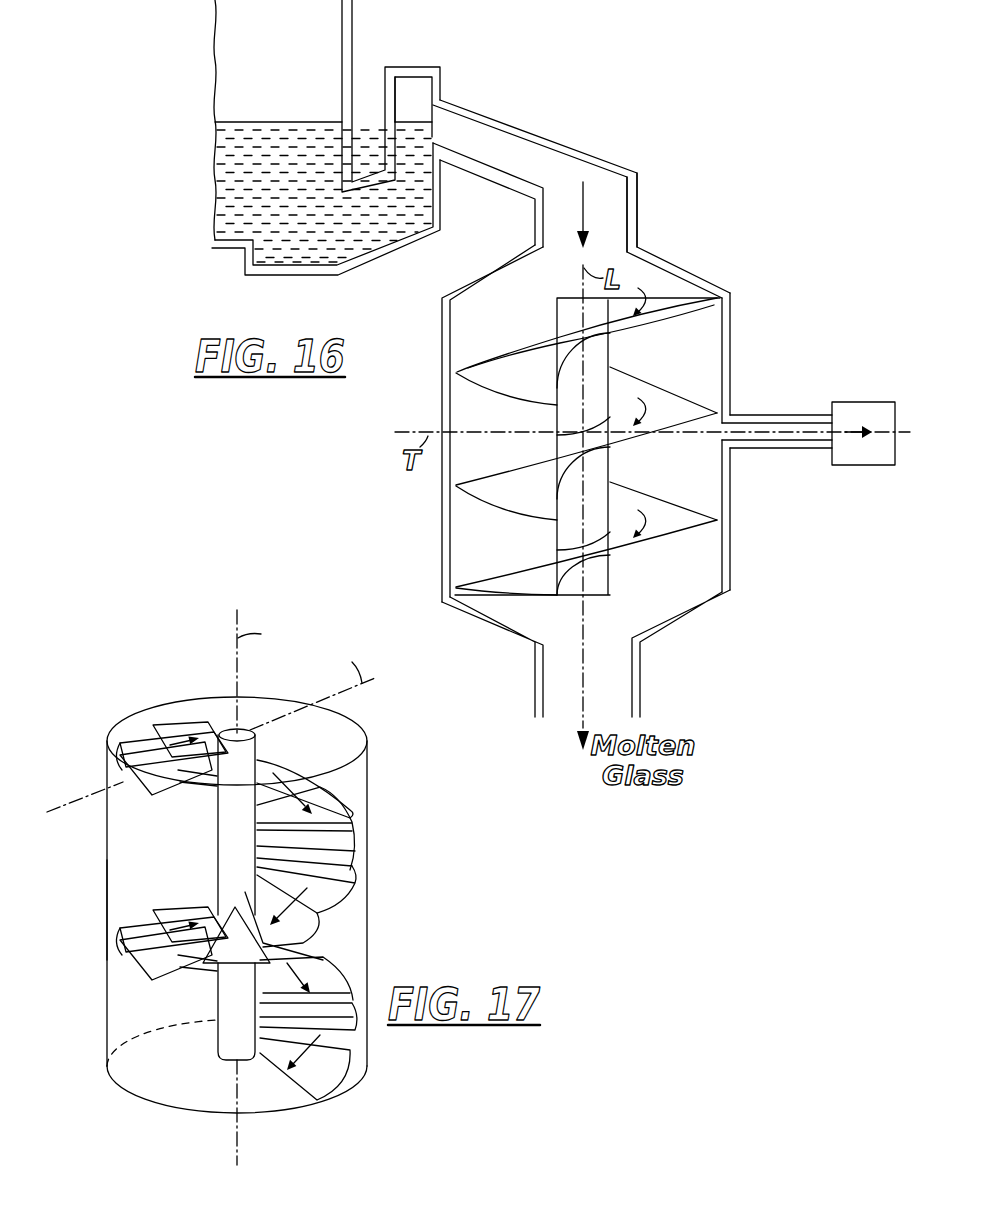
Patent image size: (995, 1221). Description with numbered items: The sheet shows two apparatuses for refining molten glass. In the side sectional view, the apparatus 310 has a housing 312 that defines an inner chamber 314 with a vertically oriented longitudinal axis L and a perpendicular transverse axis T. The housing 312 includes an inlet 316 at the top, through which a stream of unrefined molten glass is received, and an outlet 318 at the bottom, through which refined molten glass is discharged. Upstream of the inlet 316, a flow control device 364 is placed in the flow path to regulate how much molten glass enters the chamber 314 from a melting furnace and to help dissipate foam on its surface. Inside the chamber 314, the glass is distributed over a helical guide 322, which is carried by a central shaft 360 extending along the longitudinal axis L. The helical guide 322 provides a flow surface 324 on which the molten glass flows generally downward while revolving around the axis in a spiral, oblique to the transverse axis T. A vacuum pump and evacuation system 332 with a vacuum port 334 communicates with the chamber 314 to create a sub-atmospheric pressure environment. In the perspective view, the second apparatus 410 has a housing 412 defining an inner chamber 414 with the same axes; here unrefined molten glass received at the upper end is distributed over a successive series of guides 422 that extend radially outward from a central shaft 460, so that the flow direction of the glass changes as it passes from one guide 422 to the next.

In FIG. 16, the apparatus 310 is at (740, 273).
In FIG. 16, the housing 312 is at (731, 318).
In FIG. 16, the inner chamber 314 is at (503, 303).
In FIG. 16, the inlet 316 is at (616, 203).
In FIG. 16, the outlet 318 is at (642, 687).
In FIG. 16, the helical guide 322 is at (463, 387).
In FIG. 16, the flow surface 324 is at (484, 343).
In FIG. 16, the vacuum pump and evacuation system 332 is at (878, 467).
In FIG. 16, the vacuum port 334 is at (788, 415).
In FIG. 16, the central shaft 360 is at (556, 422).
In FIG. 16, the flow control device 364 is at (441, 112).
In FIG. 17, the apparatus 410 is at (112, 666).
In FIG. 17, the housing 412 is at (107, 842).
In FIG. 17, the inner chamber 414 is at (140, 873).
In FIG. 17, the guides 422 is at (355, 845).
In FIG. 17, the central shaft 460 is at (216, 838).